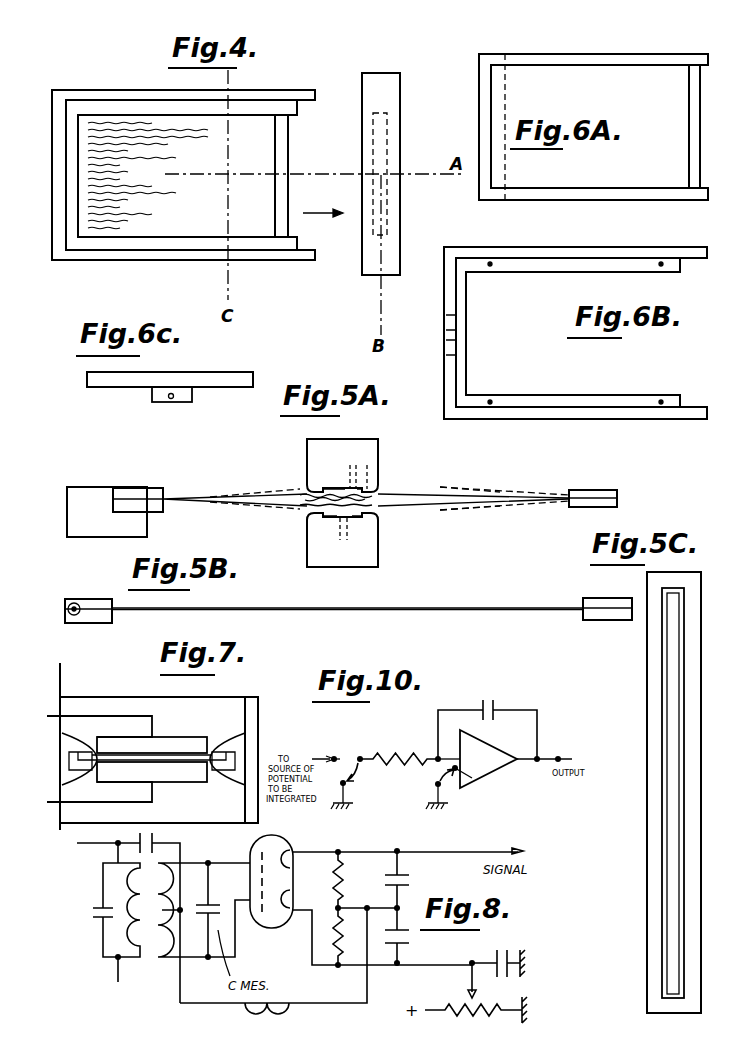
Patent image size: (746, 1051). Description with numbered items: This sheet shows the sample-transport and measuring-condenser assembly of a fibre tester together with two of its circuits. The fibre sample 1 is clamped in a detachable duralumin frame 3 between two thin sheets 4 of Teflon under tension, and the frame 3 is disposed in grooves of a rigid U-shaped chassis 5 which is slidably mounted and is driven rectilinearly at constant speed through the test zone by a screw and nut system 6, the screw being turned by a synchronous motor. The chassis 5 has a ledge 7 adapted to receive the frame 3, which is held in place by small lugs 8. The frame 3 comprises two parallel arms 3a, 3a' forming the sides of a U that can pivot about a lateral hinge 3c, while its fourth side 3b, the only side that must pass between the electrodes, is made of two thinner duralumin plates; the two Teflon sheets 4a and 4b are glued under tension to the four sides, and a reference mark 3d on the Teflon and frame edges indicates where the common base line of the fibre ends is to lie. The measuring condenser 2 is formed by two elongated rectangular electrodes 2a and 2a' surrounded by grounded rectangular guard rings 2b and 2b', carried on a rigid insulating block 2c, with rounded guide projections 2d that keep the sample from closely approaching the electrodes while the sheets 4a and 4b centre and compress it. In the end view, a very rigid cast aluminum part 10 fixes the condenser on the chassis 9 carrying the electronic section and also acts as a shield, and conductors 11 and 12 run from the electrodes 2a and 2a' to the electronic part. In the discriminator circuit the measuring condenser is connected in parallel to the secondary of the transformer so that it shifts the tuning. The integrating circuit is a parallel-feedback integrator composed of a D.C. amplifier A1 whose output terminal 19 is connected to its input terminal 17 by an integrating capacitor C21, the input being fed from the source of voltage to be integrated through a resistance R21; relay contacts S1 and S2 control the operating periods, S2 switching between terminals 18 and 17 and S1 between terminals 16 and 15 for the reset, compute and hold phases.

In FIG. 4, the optical fiber / light guide 1 is at (175, 217).
In FIG. 5A, the optical fiber / light guide 1 is at (292, 505).
In FIG. 4, the measuring cell / electrode plate 2 is at (384, 130).
In FIG. 7, the measuring cell / electrode plate 2 is at (190, 746).
In FIG. 5A, the elongated rectangular electrode 2a is at (316, 450).
In FIG. 5C, the elongated rectangular electrode 2a is at (642, 793).
In FIG. 5A, the elongated rectangular electrode 2a' is at (320, 541).
In FIG. 5A, the rectangular guard ring 2b is at (406, 470).
In FIG. 5C, the rectangular guard ring 2b is at (650, 792).
In FIG. 5A, the rectangular guard ring 2b' is at (408, 546).
In FIG. 5A, the rigid block of insulating material 2c is at (378, 448).
In FIG. 5A, the rounded guide projections 2d is at (306, 493).
In FIG. 4, the detachable frame 3 is at (236, 241).
In FIG. 6A, the parallel arms 3a is at (593, 112).
In FIG. 5A, the parallel arms 3a is at (138, 486).
In FIG. 5B, the parallel arms 3a is at (93, 598).
In FIG. 5B, the fiber holder part 3a' is at (368, 614).
In FIG. 6A, the fourth side of the frame 3b is at (695, 117).
In FIG. 5A, the fourth side of the frame 3b is at (594, 494).
In FIG. 5B, the lateral hinge 3c is at (72, 616).
In FIG. 6A, the reference mark 3d is at (508, 78).
In FIG. 4, the thin sheets of Teflon 4 is at (207, 228).
In FIG. 6A, the sheet of Teflon 4a is at (636, 102).
In FIG. 5A, the sheet of Teflon 4a is at (440, 493).
In FIG. 5B, the sheet of Teflon 4a is at (368, 607).
In FIG. 6A, the sheet of Teflon 4b is at (636, 102).
In FIG. 5A, the sheet of Teflon 4b is at (440, 512).
In FIG. 5B, the sheet of Teflon 4b is at (362, 611).
In FIG. 4, the U-shaped chassis 5 is at (77, 258).
In FIG. 6C, the U-shaped chassis 5 is at (212, 378).
In FIG. 5A, the U-shaped chassis 5 is at (98, 528).
In FIG. 7, the U-shaped chassis 5 is at (78, 760).
In FIG. 6B, the screw and nut system 6 is at (455, 320).
In FIG. 6C, the screw and nut system 6 is at (168, 398).
In FIG. 6B, the ledge 7 is at (462, 346).
In FIG. 6B, the small lugs 8 is at (662, 402).
In FIG. 7, the chassis 9 is at (53, 690).
In FIG. 4, the rigid part of cast aluminum 10 is at (399, 85).
In FIG. 7, the rigid part of cast aluminum 10 is at (172, 708).
In FIG. 7, the conductor 11 is at (118, 714).
In FIG. 7, the conductor 12 is at (152, 794).
In FIG. 10, the terminal 15 is at (322, 749).
In FIG. 10, the terminal 16 is at (352, 786).
In FIG. 10, the input terminal 17 is at (440, 757).
In FIG. 10, the terminal 18 is at (478, 784).
In FIG. 10, the output terminal 19 is at (559, 757).
In FIG. 10, the relay contact S1 is at (344, 759).
In FIG. 10, the relay contact S2 is at (448, 787).
In FIG. 10, the resistance R21 is at (422, 754).
In FIG. 10, the integrating capacitor C21 is at (487, 721).
In FIG. 10, the D.C. amplifier A1 is at (488, 759).